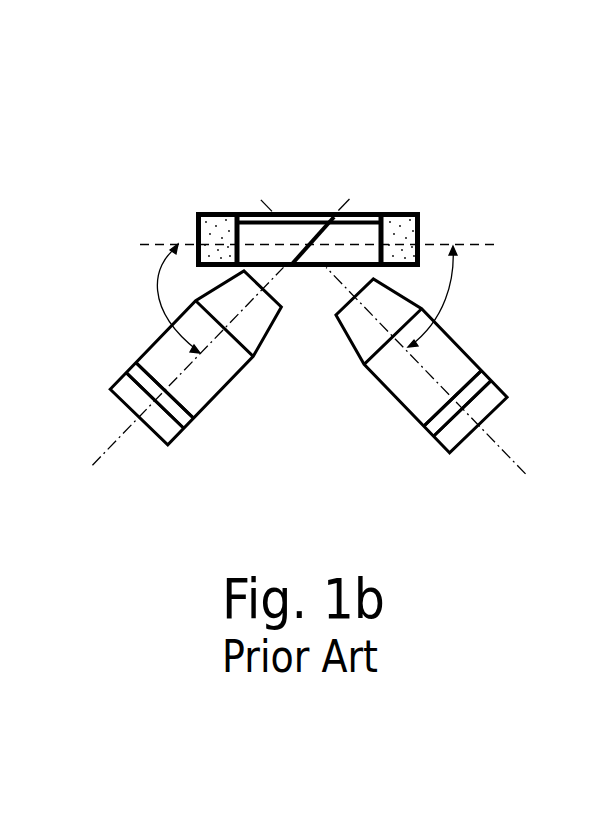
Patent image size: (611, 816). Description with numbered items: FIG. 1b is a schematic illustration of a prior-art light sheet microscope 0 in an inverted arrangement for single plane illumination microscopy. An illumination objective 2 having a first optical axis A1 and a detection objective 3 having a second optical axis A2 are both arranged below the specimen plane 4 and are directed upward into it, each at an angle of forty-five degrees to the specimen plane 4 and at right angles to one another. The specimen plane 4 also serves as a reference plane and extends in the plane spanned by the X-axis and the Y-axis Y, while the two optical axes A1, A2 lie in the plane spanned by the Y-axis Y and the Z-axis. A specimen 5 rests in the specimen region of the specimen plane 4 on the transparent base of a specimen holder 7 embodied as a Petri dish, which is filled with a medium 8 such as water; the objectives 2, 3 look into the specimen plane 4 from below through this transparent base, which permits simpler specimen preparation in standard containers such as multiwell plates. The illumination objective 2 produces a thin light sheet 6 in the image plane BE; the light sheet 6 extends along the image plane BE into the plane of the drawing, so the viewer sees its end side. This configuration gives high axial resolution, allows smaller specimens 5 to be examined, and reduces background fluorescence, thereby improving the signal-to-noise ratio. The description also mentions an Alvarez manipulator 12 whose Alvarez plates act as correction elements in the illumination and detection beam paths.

The microscope 0 is at (178, 43).
The illumination objective 2 is at (160, 345).
The detection objective 3 is at (448, 338).
The specimen plane 4 is at (480, 245).
The specimen 5 is at (358, 238).
The light sheet 6 is at (305, 224).
The specimen holder 7 is at (196, 238).
The medium 8 is at (201, 210).
The Alvarez manipulator 12 is at (140, 374).
The first optical axis A1 is at (136, 421).
The second optical axis A2 is at (479, 423).
The image plane BE is at (312, 224).
The Y-axis Y is at (21, 576).